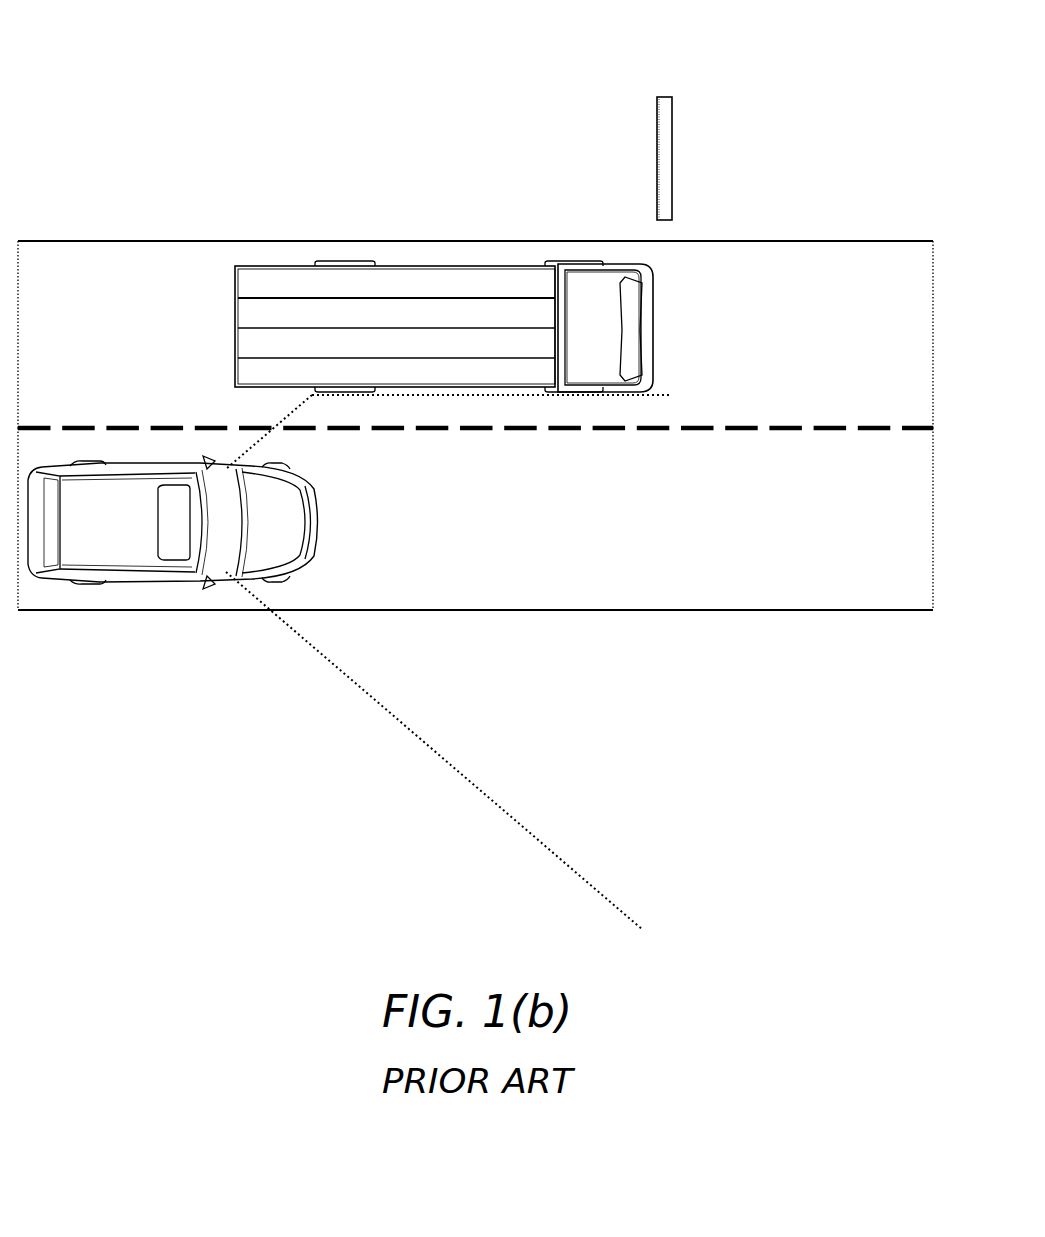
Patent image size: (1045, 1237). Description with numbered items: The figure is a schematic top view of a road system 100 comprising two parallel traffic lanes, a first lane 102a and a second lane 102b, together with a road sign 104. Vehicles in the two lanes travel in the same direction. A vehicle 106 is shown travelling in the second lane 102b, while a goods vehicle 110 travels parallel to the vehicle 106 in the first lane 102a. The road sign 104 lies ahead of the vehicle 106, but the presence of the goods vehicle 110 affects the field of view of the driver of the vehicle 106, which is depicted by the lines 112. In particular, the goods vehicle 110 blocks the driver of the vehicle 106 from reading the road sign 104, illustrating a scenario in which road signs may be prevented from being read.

The road system 100 is at (188, 88).
The first lane 102a is at (782, 356).
The second lane 102b is at (782, 524).
The road sign 104 is at (660, 97).
The vehicle 106 is at (318, 495).
The goods vehicle 110 is at (652, 346).
The field of view lines 112 is at (279, 424).